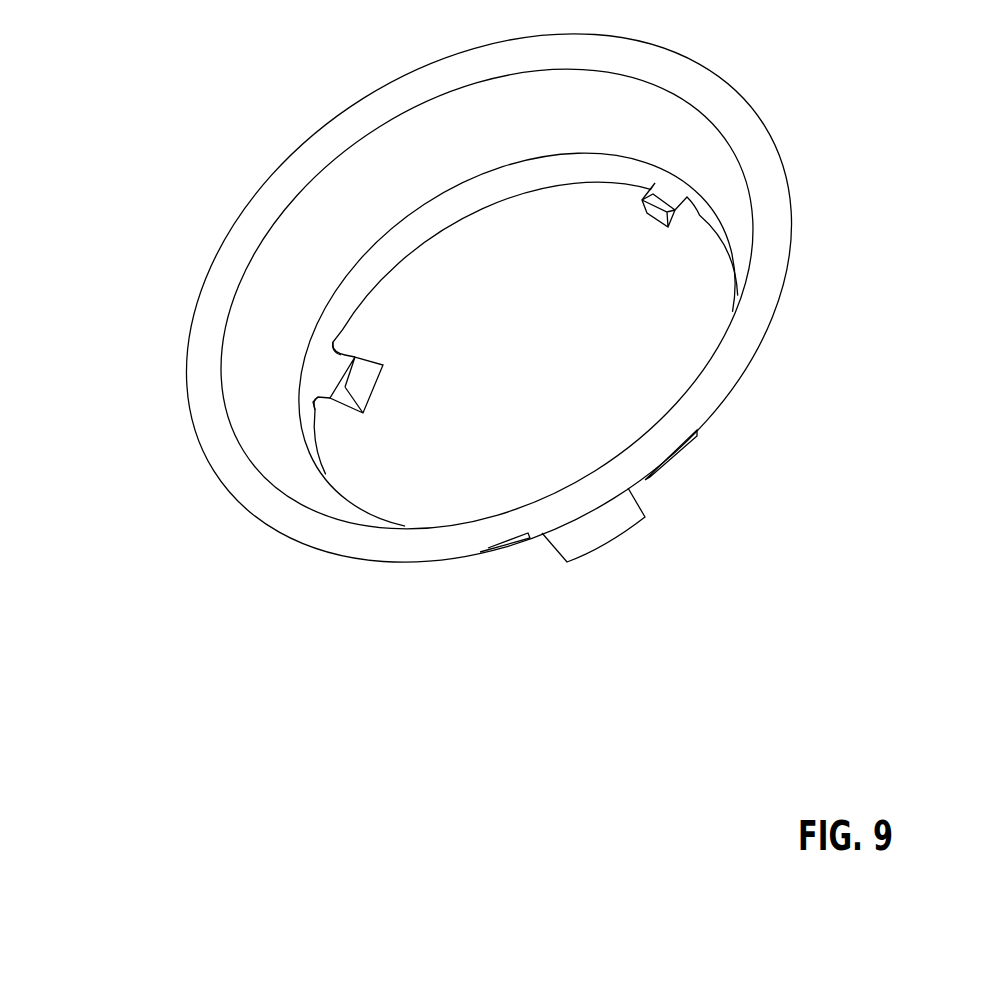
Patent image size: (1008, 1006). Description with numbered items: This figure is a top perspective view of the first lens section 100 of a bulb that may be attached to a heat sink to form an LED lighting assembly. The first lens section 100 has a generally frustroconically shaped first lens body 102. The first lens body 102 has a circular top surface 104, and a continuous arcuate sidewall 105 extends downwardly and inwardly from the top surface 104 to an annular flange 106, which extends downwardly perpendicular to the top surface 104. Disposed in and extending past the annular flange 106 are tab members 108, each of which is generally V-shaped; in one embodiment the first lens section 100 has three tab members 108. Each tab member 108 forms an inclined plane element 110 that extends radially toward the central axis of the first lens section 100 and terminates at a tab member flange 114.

The first lens section 100 is at (223, 153).
The first lens body 102 is at (128, 320).
The circular top surface 104 is at (223, 292).
The continuous arcuate sidewall 105 is at (348, 177).
The annular flange 106 is at (385, 265).
The tab member 108 is at (377, 388).
The inclined plane element 110 is at (343, 404).
The tab member flange 114 is at (355, 357).